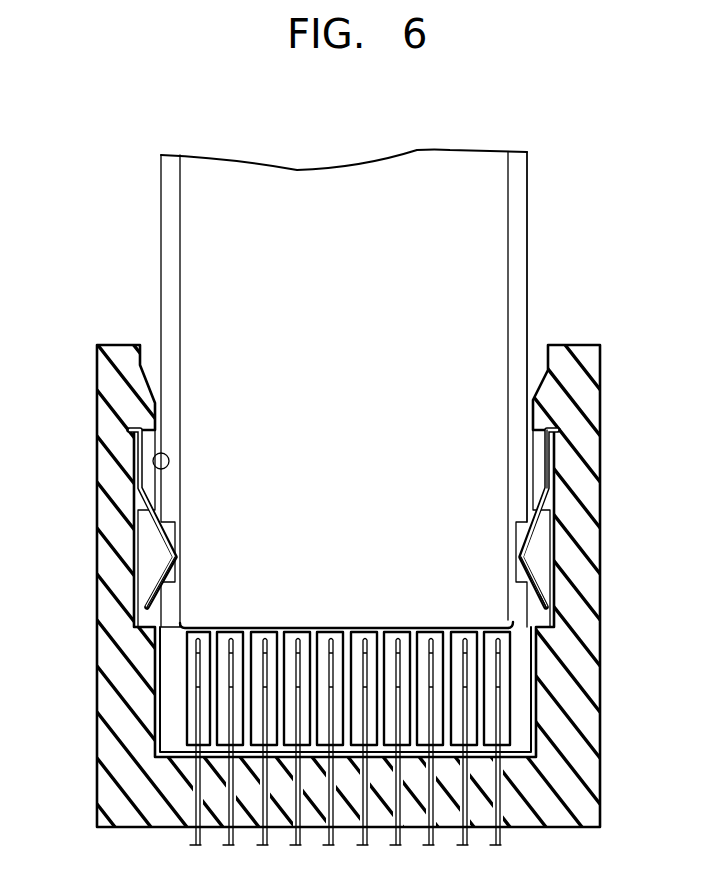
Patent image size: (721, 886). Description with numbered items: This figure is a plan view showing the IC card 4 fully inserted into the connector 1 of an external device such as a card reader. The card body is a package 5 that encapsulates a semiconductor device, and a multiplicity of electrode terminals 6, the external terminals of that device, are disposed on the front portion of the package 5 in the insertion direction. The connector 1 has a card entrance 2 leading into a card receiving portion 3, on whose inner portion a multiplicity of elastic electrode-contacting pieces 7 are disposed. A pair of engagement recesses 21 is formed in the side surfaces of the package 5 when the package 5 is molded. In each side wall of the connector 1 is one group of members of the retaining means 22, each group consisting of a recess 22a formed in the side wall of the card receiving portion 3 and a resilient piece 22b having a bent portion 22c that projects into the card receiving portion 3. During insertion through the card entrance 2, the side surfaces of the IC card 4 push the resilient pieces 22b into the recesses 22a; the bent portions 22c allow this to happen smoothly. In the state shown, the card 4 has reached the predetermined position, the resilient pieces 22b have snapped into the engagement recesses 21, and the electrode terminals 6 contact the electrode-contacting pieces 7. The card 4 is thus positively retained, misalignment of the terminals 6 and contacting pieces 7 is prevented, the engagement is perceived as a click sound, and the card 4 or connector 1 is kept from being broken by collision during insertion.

The connector 1 is at (580, 345).
The card entrance 2 is at (153, 363).
The card receiving portion 3 is at (153, 460).
The IC card 4 is at (529, 211).
The package 5 is at (470, 151).
The electrode terminals 6 is at (190, 727).
The electrode-contacting pieces 7 is at (198, 843).
The engagement recesses 21 is at (170, 543).
The retaining means 22 is at (162, 573).
The recess 22a is at (553, 605).
The resilient piece 22b is at (540, 583).
The bent portion 22c is at (528, 556).